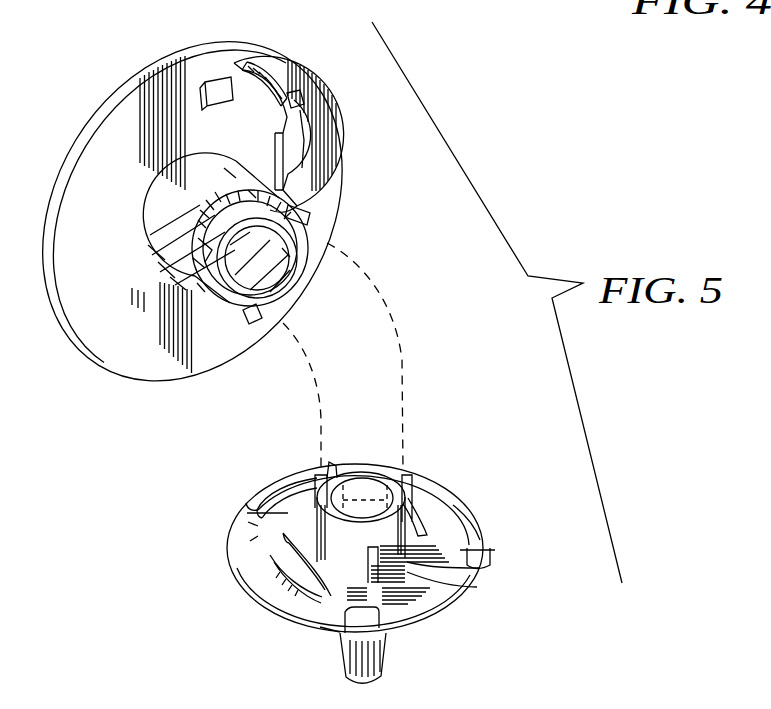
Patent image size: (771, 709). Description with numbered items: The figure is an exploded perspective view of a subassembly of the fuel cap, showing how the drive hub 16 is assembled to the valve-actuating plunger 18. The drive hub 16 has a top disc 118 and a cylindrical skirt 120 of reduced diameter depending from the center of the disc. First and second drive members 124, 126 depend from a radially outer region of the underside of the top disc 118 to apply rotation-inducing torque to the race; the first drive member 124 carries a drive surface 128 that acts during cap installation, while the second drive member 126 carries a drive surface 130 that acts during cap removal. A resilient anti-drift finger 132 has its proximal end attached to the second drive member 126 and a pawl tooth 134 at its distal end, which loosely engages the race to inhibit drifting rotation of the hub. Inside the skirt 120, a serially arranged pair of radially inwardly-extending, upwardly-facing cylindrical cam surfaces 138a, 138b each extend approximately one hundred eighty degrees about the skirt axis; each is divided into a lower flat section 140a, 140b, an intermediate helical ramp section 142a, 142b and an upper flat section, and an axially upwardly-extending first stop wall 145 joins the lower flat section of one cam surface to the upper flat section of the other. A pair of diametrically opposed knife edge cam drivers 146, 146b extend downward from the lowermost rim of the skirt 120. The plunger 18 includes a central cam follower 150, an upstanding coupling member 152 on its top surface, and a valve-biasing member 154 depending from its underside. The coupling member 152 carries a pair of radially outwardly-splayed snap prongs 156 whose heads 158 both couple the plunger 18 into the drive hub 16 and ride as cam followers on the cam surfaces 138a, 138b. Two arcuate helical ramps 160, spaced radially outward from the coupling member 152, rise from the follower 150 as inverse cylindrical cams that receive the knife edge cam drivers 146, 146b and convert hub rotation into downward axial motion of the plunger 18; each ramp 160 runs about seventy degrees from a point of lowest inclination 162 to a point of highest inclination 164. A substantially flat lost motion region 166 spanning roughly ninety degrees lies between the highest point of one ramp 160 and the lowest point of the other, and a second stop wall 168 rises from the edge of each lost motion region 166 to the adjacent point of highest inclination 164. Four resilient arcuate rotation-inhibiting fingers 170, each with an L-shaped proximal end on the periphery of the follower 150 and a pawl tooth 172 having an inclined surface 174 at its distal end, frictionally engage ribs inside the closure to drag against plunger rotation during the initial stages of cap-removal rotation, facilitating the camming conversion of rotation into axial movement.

The drive hub 16 is at (52, 194).
The plunger 18 is at (287, 618).
The top disc 118 is at (97, 342).
The cylindrical skirt 120 is at (205, 185).
The first drive member 124 is at (222, 83).
The second drive member 126 is at (302, 154).
The drive surface 128 is at (203, 95).
The drive surface 130 is at (310, 195).
The anti-drift finger 132 is at (304, 97).
The pawl tooth 134 is at (282, 68).
The cam surface 138a is at (195, 232).
The cam surface 138b is at (277, 282).
The lower flat section 140a is at (193, 258).
The lower flat section 140b is at (248, 190).
The intermediate helical ramp section 142a is at (210, 238).
The intermediate helical ramp section 142b is at (224, 168).
The first stop wall 145 is at (290, 257).
The knife edge cam driver 146 is at (246, 324).
The knife edge cam driver 146b is at (312, 216).
The central cam follower 150 is at (437, 550).
The coupling member 152 is at (305, 512).
The valve-biasing member 154 is at (384, 668).
The snap prong 156 is at (407, 478).
The head 158 is at (316, 476).
The helical ramp 160 is at (320, 580).
The point of lowest inclination 162 is at (422, 528).
The point of highest inclination 164 is at (405, 615).
The lost motion region 166 is at (477, 588).
The second stop wall 168 is at (395, 602).
The rotation-inhibiting finger 170 is at (470, 507).
The pawl tooth 172 is at (495, 566).
The inclined surface 174 is at (483, 550).